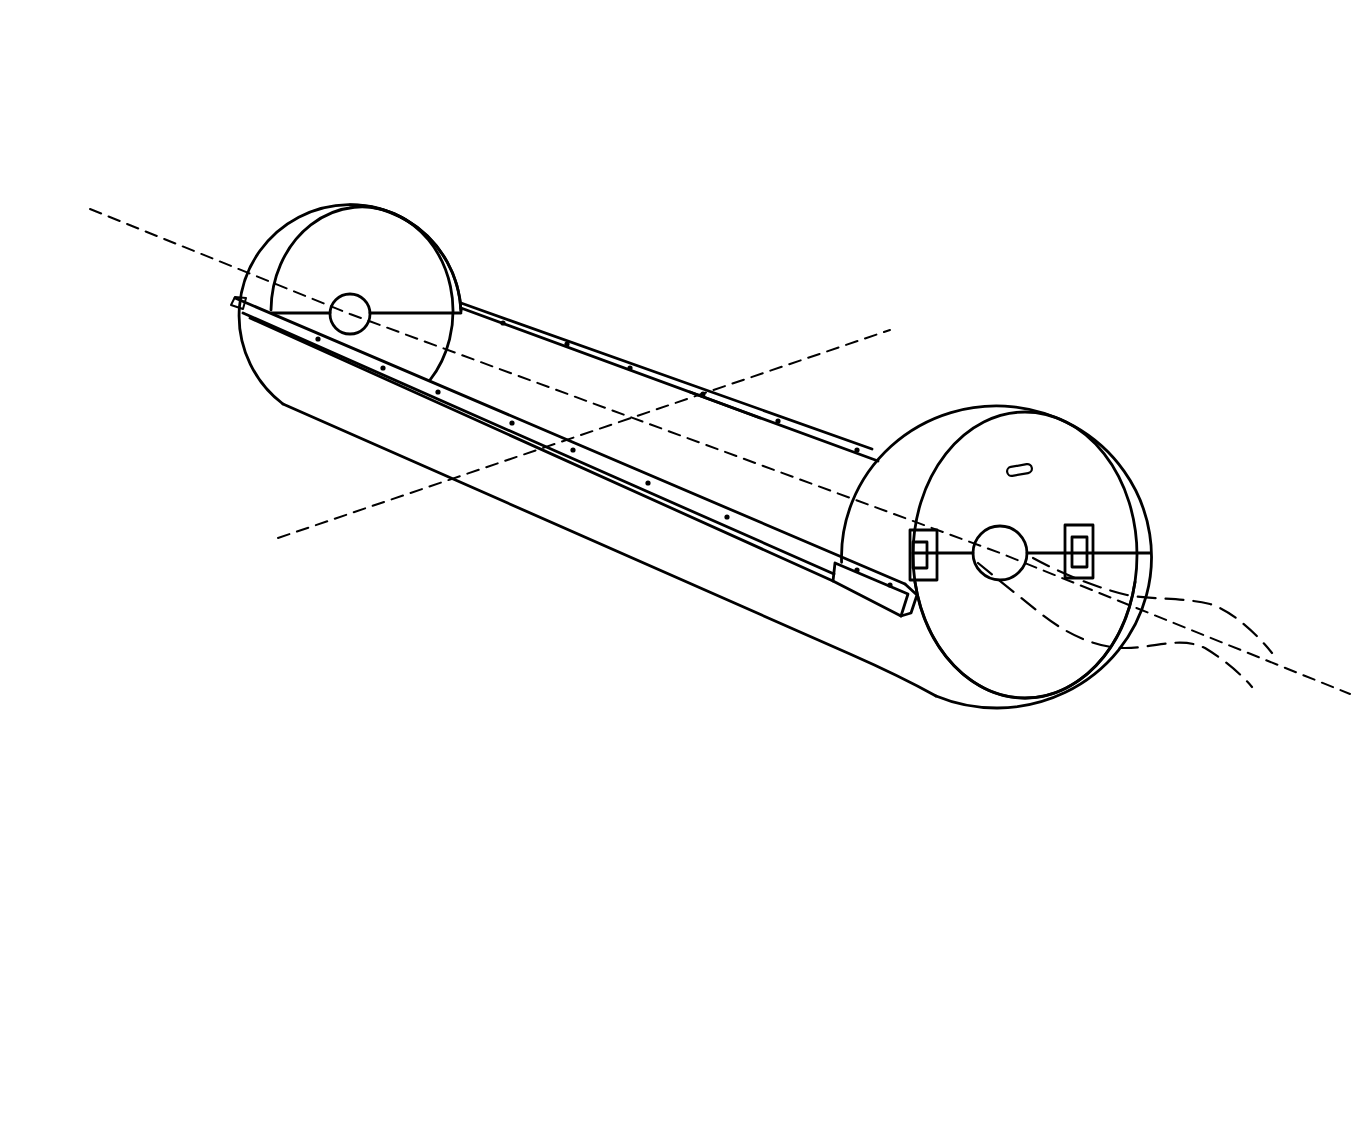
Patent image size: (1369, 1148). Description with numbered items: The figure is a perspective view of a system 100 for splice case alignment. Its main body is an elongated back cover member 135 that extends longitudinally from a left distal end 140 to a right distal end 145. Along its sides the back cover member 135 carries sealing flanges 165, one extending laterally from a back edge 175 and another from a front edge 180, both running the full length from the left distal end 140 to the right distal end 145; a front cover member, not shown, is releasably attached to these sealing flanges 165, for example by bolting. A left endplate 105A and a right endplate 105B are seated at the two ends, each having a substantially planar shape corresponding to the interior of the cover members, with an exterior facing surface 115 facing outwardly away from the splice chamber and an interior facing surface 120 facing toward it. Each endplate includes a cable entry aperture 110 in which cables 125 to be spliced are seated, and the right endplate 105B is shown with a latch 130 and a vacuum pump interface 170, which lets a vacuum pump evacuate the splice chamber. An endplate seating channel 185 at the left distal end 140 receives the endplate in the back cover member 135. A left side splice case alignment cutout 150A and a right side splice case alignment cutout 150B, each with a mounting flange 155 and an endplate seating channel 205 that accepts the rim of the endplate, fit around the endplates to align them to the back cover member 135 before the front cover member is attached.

The system for splice case alignment 100 is at (288, 672).
The left endplate 105A is at (372, 247).
The right endplate 105B is at (1094, 480).
The cable entry aperture 110 is at (1003, 547).
The exterior facing surface 115 is at (1057, 659).
The interior facing surface 120 is at (423, 295).
The cables 125 is at (1237, 631).
The latch 130 is at (1092, 553).
The back cover member 135 is at (503, 487).
The left distal end 140 is at (240, 391).
The right distal end 145 is at (989, 727).
The left side splice case alignment cutout 150A is at (294, 221).
The right side splice case alignment cutout 150B is at (925, 443).
The mounting flange 155 is at (873, 579).
The sealing flanges 165 is at (477, 412).
The vacuum pump interface 170 is at (1022, 466).
The back edge 175 is at (722, 405).
The front edge 180 is at (682, 490).
The endplate seating channel 185 is at (510, 327).
The endplate seating channel 205 is at (445, 262).